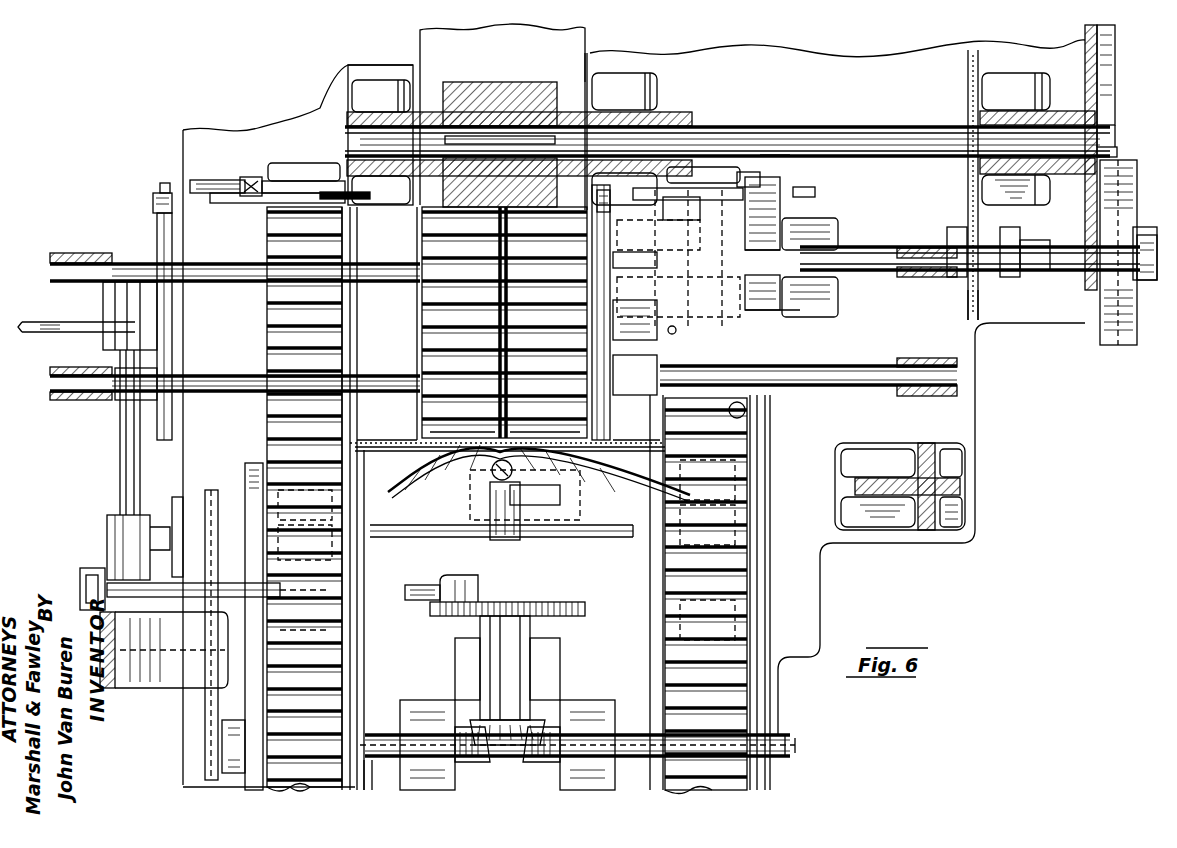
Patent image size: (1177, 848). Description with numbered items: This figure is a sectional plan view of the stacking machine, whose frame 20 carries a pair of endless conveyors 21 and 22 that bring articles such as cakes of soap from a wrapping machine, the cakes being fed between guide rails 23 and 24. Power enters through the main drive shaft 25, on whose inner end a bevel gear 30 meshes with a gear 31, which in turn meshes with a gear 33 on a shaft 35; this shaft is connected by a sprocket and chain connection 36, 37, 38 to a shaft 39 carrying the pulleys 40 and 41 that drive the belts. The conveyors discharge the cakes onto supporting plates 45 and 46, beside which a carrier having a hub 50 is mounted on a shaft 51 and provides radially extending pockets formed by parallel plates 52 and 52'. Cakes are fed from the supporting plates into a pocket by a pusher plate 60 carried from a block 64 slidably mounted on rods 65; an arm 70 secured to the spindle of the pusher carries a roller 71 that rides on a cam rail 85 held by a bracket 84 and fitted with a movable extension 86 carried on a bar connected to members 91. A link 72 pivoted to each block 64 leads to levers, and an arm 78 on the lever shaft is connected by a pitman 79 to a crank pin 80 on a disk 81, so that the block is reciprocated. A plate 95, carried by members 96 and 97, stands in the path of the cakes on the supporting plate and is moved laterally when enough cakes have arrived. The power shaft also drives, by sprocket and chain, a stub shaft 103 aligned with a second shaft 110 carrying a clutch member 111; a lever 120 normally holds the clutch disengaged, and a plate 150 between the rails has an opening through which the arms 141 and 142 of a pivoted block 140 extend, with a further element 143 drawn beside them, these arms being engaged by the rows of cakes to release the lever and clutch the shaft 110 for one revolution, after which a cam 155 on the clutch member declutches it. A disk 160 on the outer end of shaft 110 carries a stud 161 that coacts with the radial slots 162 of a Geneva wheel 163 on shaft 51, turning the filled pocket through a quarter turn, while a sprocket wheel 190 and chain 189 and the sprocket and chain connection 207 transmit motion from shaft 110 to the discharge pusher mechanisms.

The frame 20 is at (976, 410).
The conveyor 21 is at (705, 788).
The conveyor 22 is at (300, 788).
The guide rail 23 is at (245, 680).
The guide rail 24 is at (360, 690).
The main drive shaft 25 is at (790, 740).
The bevel gear 30 is at (537, 762).
The gear 31 is at (505, 746).
The gear 33 is at (470, 762).
The shaft 35 is at (372, 762).
The sprocket 36 is at (218, 718).
The chain 37 is at (205, 655).
The sprocket 38 is at (208, 490).
The shaft 39 is at (410, 537).
The pulley 40 is at (350, 600).
The pulley 41 is at (740, 538).
The supporting plate 45 is at (636, 427).
The supporting plate 46 is at (386, 419).
The hub 50 is at (556, 95).
The shaft 51 is at (765, 158).
The plate 52 is at (479, 322).
The plate 52' is at (502, 117).
The pusher plate 60 is at (183, 228).
The block 64 is at (157, 234).
The rod 65 is at (222, 360).
The arm 70 is at (153, 203).
The roller 71 is at (164, 193).
The link 72 is at (40, 332).
The arm 78 is at (107, 548).
The pitman 79 is at (412, 585).
The crank pin 80 is at (478, 584).
The disk 81 is at (555, 602).
The bracket 84 is at (250, 177).
The cam rail 85 is at (314, 181).
The movable extension 86 is at (205, 180).
The member 91 is at (292, 163).
The plate 95 is at (688, 188).
The member 96 is at (655, 188).
The member 97 is at (722, 188).
The stub shaft 103 is at (668, 280).
The shaft 110 is at (838, 250).
The clutch member 111 is at (785, 212).
The lever 120 is at (746, 421).
The block 140 is at (430, 478).
The arm 141 is at (560, 427).
The arm 142 is at (447, 438).
The gear 143 is at (532, 438).
The plate 150 is at (370, 445).
The cam 155 is at (775, 180).
The disk 160 is at (1125, 346).
The stud 161 is at (1100, 300).
The radial slot 162 is at (1100, 133).
The Geneva wheel 163 is at (1105, 75).
The chain 189 is at (978, 52).
The sprocket wheel 190 is at (982, 320).
The sprocket and chain connection 207 is at (1032, 325).